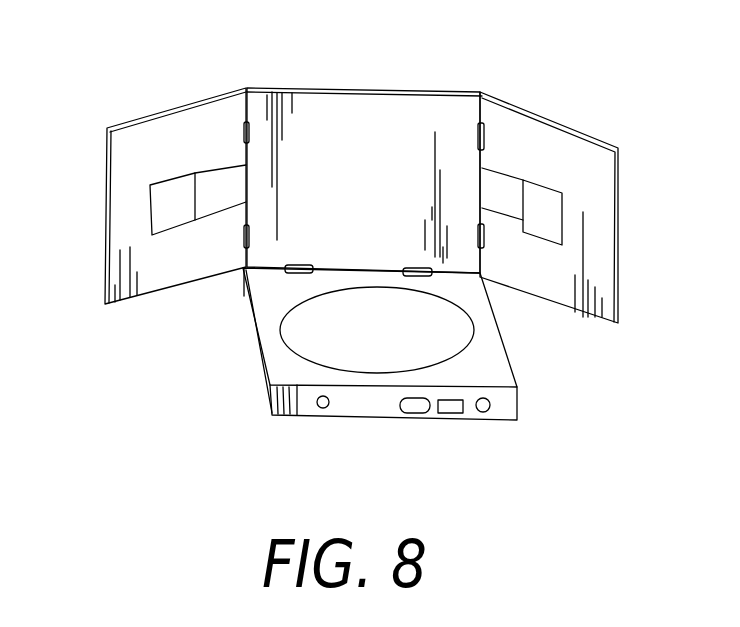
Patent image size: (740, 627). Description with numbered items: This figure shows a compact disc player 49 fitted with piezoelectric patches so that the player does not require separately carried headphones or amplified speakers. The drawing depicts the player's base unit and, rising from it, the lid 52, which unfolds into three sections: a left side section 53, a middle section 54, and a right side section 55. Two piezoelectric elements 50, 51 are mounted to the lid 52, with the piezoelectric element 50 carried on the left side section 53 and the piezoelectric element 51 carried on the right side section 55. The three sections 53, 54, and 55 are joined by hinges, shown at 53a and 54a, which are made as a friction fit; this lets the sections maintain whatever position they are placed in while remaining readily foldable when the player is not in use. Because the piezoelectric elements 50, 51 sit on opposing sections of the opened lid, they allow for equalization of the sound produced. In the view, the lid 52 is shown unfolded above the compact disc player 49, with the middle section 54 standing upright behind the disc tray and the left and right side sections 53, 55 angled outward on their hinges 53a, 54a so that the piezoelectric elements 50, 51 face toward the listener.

The compact disc player 49 is at (252, 352).
The piezoelectric element 50 is at (148, 202).
The piezoelectric element 51 is at (562, 213).
The lid 52 is at (448, 225).
The left side section 53 is at (162, 127).
The hinge 53a is at (244, 296).
The section 54 is at (377, 88).
The hinge 54a is at (244, 128).
The right side section 55 is at (567, 120).